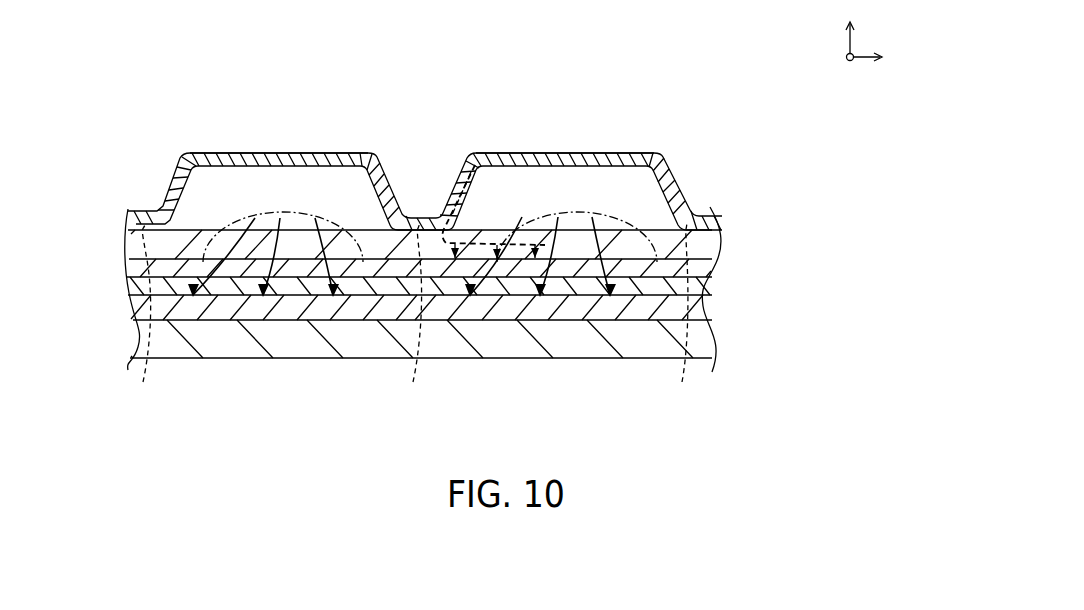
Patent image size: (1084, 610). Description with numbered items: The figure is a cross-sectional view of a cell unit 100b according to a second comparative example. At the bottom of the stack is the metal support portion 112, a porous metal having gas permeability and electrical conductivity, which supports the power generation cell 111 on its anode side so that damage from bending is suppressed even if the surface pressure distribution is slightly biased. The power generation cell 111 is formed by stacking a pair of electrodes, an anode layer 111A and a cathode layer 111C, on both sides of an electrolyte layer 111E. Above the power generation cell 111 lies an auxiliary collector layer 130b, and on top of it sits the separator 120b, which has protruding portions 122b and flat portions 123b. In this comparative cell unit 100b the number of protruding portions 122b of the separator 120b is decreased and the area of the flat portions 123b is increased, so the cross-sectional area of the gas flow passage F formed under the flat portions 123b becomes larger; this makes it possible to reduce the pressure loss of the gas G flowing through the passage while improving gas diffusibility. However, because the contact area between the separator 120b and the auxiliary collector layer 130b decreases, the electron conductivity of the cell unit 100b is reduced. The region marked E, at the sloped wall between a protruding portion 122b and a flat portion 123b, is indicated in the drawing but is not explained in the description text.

The cell unit 100b is at (147, 82).
The separator 120b is at (672, 166).
The flat portion 123b is at (280, 153).
The auxiliary collector layer 130b is at (707, 242).
The power generation cell 111 is at (802, 247).
The cathode layer 111C is at (704, 270).
The electrolyte layer 111E is at (702, 291).
The anode layer 111A is at (705, 313).
The metal support portion 112 is at (708, 344).
The protruding portion 122b is at (415, 316).
The gas flow passage F is at (283, 204).
The gas G is at (348, 228).
The edge portion E is at (462, 199).